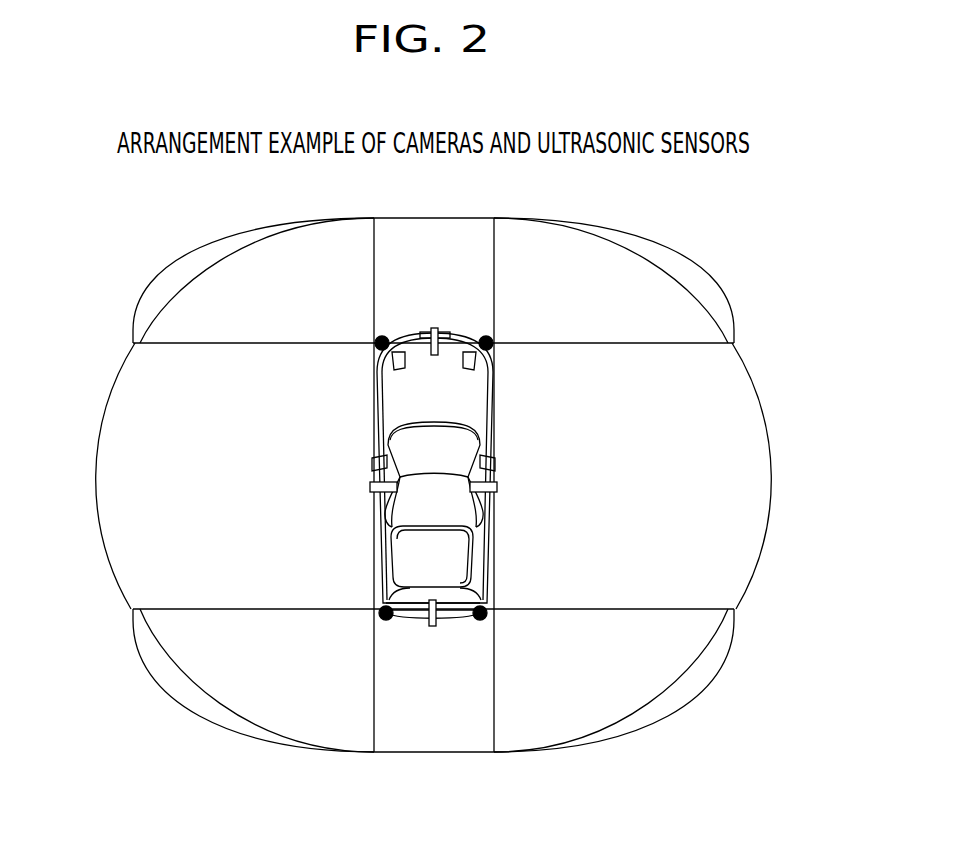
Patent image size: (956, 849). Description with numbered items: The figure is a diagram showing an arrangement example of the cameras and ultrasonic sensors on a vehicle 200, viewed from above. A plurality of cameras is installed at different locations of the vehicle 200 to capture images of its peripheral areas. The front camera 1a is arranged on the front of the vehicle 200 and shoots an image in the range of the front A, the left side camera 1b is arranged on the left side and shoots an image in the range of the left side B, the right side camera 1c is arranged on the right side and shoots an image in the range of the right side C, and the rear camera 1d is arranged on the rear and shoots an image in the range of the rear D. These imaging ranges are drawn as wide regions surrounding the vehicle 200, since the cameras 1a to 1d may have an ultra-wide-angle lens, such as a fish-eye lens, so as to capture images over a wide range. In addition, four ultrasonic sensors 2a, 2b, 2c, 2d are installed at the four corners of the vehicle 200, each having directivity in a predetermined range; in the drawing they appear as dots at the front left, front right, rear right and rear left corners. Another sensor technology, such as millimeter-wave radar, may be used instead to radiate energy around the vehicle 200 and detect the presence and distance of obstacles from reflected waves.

The front camera 1a is at (434, 328).
The left side camera 1b is at (370, 487).
The right side camera 1c is at (497, 487).
The rear camera 1d is at (433, 626).
The ultrasonic sensor 2a is at (378, 349).
The ultrasonic sensor 2b is at (490, 349).
The ultrasonic sensor 2c is at (488, 617).
The ultrasonic sensor 2d is at (380, 617).
The vehicle 200 is at (448, 507).
The front A is at (718, 292).
The left side B is at (116, 380).
The right side C is at (773, 476).
The rear D is at (435, 752).